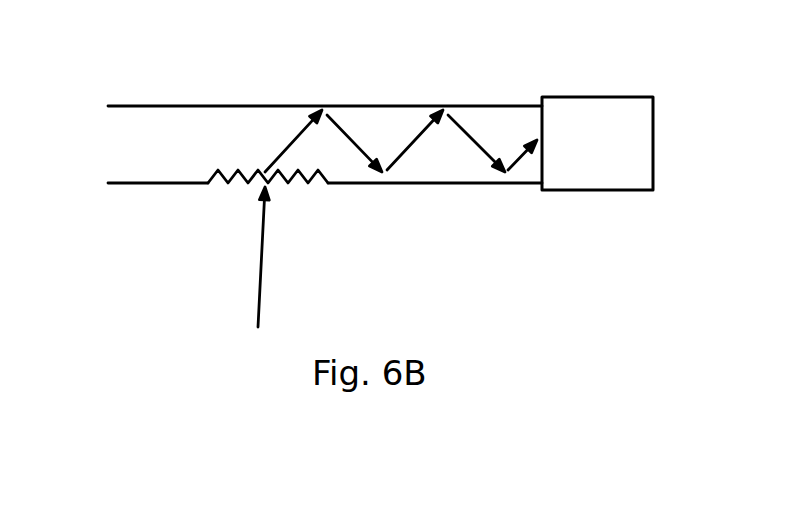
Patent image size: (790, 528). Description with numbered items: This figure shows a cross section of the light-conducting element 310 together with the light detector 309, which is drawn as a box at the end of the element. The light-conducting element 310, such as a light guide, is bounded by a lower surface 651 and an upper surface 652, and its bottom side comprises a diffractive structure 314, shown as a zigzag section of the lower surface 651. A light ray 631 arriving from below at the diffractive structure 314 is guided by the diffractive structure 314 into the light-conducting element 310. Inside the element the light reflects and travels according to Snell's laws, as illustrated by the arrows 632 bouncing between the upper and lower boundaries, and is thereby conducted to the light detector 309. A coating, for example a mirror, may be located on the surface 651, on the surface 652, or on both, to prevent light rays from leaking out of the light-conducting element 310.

The light detector 309 is at (587, 97).
The light-conducting element 310 is at (278, 105).
The diffractive structure 314 is at (237, 187).
The light ray 631 is at (265, 292).
The arrows 632 is at (353, 138).
The surface of the light-conducting element 651 is at (128, 185).
The surface of the light-conducting element 652 is at (152, 103).